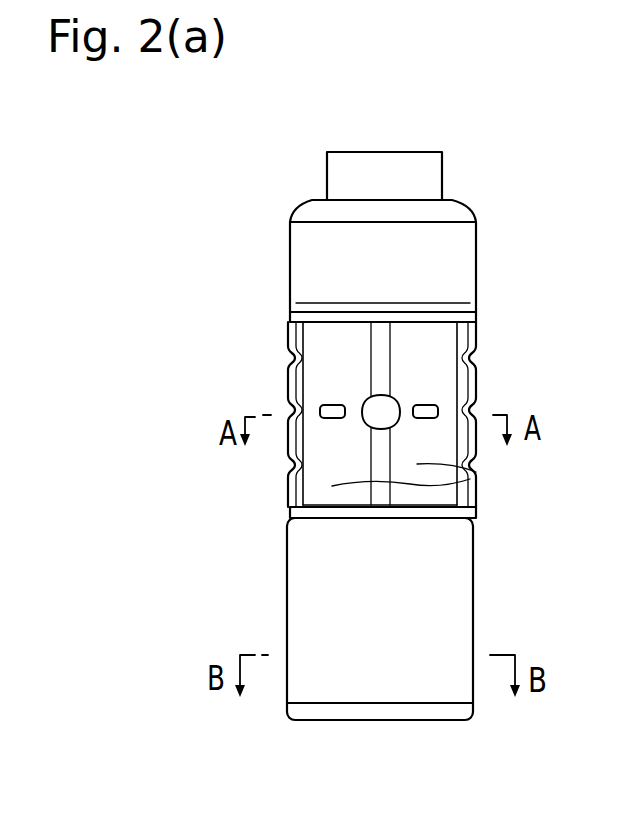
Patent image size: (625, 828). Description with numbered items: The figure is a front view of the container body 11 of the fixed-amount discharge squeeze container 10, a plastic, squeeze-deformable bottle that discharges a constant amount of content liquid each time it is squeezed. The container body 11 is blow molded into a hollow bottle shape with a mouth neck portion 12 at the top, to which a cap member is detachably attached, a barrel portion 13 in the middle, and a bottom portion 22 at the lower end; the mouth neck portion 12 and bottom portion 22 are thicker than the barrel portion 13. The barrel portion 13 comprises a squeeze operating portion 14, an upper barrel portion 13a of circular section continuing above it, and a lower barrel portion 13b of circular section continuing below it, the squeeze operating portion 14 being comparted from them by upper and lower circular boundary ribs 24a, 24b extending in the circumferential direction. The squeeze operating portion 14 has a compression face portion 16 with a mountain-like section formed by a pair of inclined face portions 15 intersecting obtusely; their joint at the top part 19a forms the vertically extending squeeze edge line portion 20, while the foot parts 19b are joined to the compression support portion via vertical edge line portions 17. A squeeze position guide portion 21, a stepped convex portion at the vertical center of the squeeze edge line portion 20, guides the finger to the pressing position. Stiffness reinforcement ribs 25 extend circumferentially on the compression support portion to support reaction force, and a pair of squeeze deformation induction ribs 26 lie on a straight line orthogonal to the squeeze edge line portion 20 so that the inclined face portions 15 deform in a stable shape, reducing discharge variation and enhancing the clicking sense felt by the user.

The fixed-amount discharge squeeze container 10 is at (272, 216).
The container body 11 is at (466, 191).
The mouth neck portion 12 is at (403, 167).
The barrel portion 13 is at (425, 387).
The upper barrel portion 13a is at (320, 275).
The lower barrel portion 13b is at (317, 588).
The squeeze operating portion 14 is at (287, 403).
The inclined face portions 15 is at (484, 480).
The compression face portion 16 is at (427, 427).
The edge line portion 17 is at (322, 408).
The top part 19a is at (380, 362).
The foot parts 19b is at (332, 411).
The squeeze edge line portion 20 is at (380, 413).
The squeeze position guide portion 21 is at (376, 415).
The bottom portion 22 is at (423, 718).
The upper circular boundary rib 24a is at (435, 305).
The lower circular boundary rib 24b is at (468, 508).
The stiffness reinforcement ribs 25 is at (290, 408).
The squeeze deformation induction ribs 26 is at (287, 383).